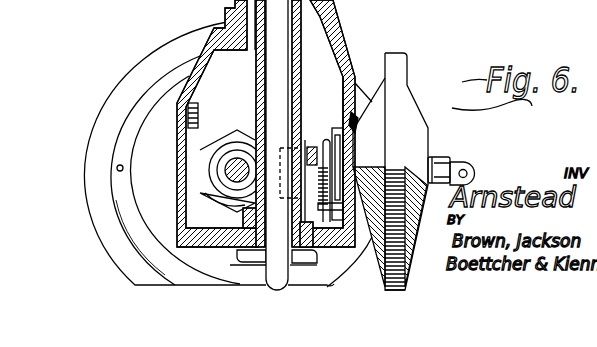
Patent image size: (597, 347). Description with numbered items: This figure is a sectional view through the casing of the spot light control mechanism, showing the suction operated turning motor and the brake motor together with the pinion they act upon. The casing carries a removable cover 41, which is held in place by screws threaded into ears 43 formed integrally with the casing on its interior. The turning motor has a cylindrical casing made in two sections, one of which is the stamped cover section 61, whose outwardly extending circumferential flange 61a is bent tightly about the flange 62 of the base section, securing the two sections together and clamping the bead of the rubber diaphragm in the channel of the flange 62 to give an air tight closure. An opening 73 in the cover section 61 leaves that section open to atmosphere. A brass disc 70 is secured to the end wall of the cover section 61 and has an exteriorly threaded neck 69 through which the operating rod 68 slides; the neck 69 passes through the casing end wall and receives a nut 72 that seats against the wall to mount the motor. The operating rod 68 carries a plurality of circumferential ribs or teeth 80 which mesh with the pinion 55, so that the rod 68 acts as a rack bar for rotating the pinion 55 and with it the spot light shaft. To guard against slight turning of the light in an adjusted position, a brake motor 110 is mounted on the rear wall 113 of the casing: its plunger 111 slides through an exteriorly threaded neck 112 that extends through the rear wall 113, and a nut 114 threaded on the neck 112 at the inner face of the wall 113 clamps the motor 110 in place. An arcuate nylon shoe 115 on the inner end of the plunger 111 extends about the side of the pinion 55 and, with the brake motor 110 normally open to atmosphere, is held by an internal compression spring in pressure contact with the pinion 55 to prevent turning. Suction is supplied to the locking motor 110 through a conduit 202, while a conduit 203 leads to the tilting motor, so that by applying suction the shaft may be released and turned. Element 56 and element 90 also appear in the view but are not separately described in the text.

The circumferential flange 61a is at (72, 216).
The cover section 61 is at (125, 232).
The circumferential flange 62 is at (151, 4).
The brass disc 70 is at (152, 113).
The opening 73 is at (117, 168).
The removable cover 41 is at (178, 147).
The operating rod 68 is at (200, 170).
The nut 72 is at (198, 195).
The ears 43 is at (198, 110).
The circumferential ribs or teeth 80 is at (228, 160).
The exteriorly threaded neck 69 is at (230, 192).
The shaft 56 is at (250, 256).
The pinion 55 is at (305, 133).
The conduit 203 is at (283, 50).
The rear wall 113 is at (343, 79).
The arcuate shoe 115 is at (315, 147).
The exteriorly threaded neck 112 is at (353, 131).
The plunger 111 is at (318, 166).
The nut 114 is at (347, 215).
The brake motor 110 is at (408, 55).
The conduit 202 is at (476, 164).
The cover 90 is at (338, 23).